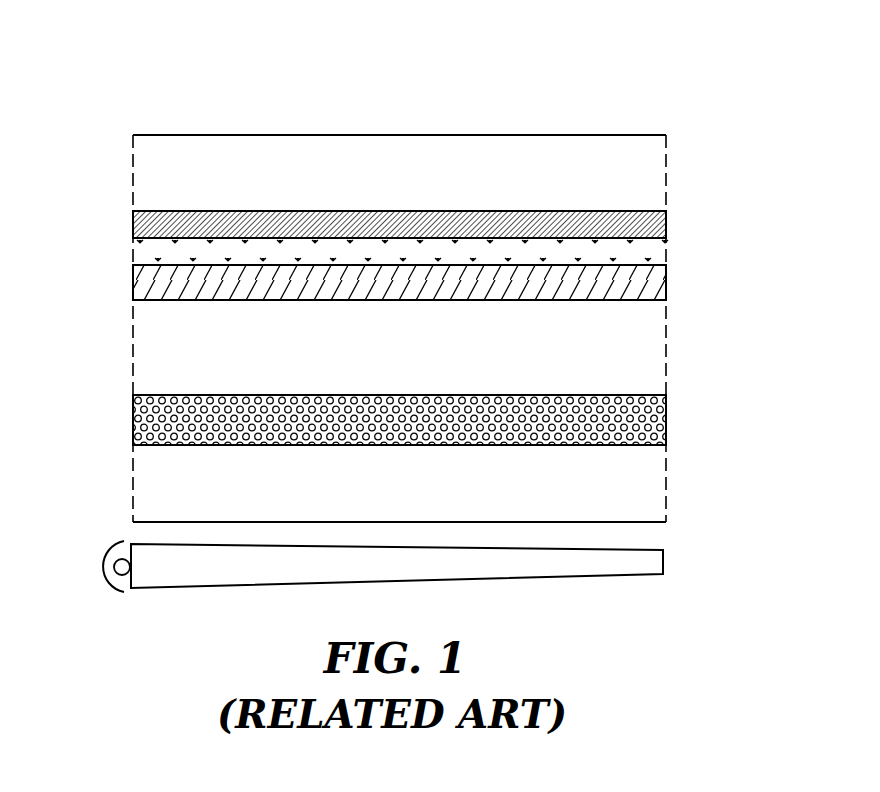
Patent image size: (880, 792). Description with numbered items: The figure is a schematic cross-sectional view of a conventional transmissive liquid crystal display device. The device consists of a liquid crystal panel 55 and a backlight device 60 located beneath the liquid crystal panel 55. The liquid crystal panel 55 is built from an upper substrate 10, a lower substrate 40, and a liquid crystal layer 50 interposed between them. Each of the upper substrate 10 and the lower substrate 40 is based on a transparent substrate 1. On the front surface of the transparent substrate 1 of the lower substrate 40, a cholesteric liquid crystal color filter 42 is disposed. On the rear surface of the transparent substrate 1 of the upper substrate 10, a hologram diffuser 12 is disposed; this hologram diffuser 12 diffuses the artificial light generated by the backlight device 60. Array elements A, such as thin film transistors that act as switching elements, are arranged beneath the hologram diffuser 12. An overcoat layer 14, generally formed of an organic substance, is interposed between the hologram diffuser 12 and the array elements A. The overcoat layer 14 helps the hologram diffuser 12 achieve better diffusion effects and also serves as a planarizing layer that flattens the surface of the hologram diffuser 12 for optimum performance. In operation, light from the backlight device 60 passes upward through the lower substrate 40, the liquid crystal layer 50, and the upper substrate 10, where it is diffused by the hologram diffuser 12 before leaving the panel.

The liquid crystal panel 55 is at (664, 108).
The transparent substrate 1 is at (402, 187).
The upper substrate 10 is at (681, 140).
The hologram diffuser 12 is at (135, 222).
The overcoat layer 14 is at (140, 256).
The array elements A is at (135, 293).
The liquid crystal layer 50 is at (681, 303).
The cholesteric liquid crystal color filter 42 is at (133, 417).
The lower substrate 40 is at (681, 398).
The backlight device 60 is at (663, 550).